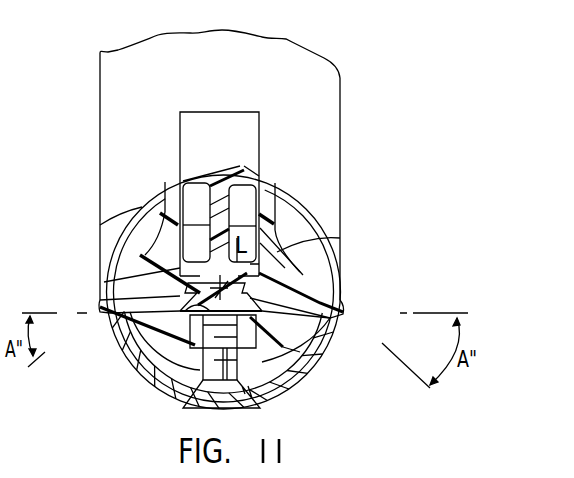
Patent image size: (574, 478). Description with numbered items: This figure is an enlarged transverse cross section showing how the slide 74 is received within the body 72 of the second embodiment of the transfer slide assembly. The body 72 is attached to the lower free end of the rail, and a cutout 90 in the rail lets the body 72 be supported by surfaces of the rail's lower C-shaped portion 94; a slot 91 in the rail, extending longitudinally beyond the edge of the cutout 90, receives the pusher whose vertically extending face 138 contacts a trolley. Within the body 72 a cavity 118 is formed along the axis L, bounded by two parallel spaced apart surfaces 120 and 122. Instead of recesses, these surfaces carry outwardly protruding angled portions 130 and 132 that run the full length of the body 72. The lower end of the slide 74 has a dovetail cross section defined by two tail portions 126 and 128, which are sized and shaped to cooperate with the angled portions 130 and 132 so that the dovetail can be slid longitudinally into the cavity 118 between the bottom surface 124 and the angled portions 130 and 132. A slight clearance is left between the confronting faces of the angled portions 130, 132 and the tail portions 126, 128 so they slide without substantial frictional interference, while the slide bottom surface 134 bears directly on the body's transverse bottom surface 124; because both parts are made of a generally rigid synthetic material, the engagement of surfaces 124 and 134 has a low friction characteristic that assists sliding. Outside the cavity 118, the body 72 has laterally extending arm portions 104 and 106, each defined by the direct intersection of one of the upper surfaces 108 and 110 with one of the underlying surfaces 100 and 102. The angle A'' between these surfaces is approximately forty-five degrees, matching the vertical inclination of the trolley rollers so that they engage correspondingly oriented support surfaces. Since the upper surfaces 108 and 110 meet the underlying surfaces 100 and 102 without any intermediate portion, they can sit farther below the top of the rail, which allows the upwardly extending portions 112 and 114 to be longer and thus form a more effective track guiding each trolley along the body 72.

The face 138 is at (236, 120).
The slide 74 is at (212, 170).
The slot 91 is at (258, 160).
The upwardly extending portion 114 is at (182, 170).
The upwardly extending portion 112 is at (257, 184).
The cavity 118 is at (262, 168).
The parallel spaced apart surface 120 is at (170, 190).
The parallel spaced apart surface 122 is at (262, 206).
The cutout 90 is at (307, 228).
The laterally extending arm portion 106 is at (158, 250).
The upper surface 108 is at (290, 248).
The upper surface 110 is at (150, 268).
The laterally extending arm portion 104 is at (300, 258).
The angled portion 132 is at (157, 291).
The angled portion 130 is at (322, 296).
The underlying surface 100 is at (335, 318).
The underlying surface 102 is at (106, 318).
The tail portion 126 is at (320, 340).
The slide bottom surface 134 is at (308, 357).
The tail portion 128 is at (123, 355).
The bottom surface 124 is at (150, 385).
The body 72 is at (303, 378).
The lower C-shaped portion 94 is at (284, 381).